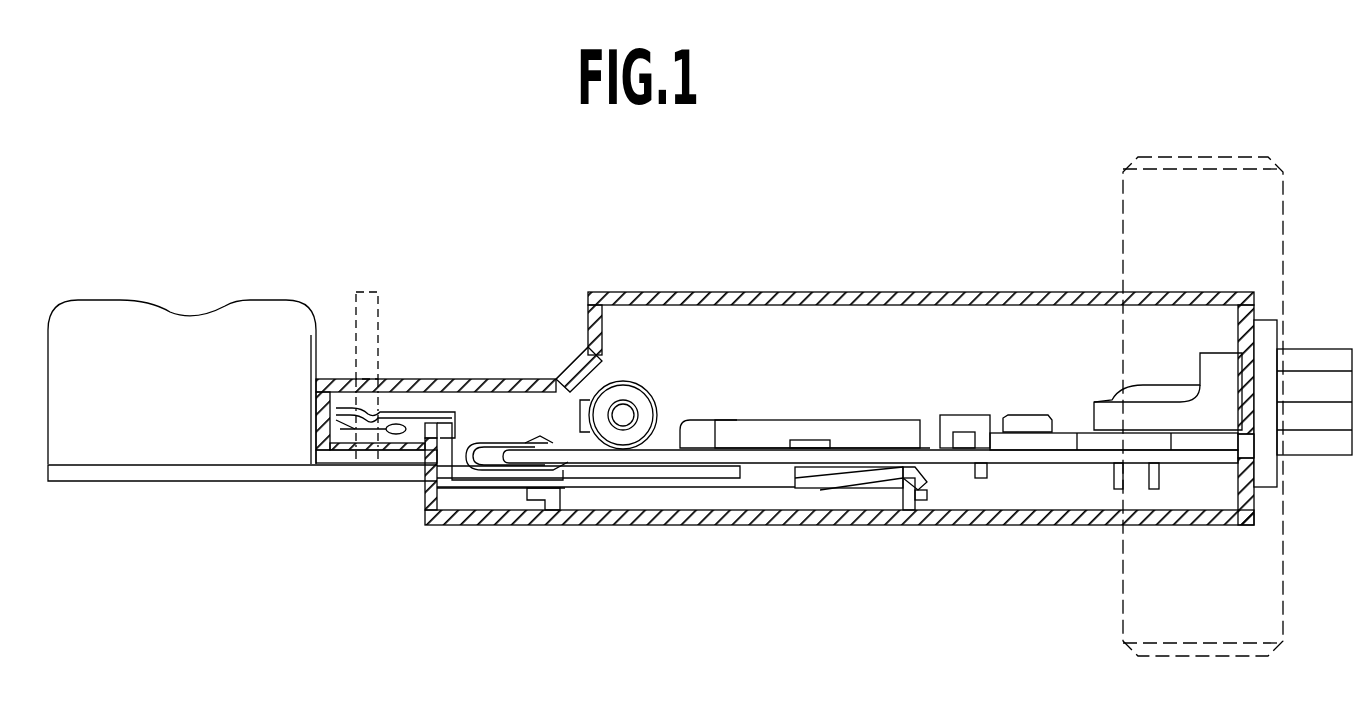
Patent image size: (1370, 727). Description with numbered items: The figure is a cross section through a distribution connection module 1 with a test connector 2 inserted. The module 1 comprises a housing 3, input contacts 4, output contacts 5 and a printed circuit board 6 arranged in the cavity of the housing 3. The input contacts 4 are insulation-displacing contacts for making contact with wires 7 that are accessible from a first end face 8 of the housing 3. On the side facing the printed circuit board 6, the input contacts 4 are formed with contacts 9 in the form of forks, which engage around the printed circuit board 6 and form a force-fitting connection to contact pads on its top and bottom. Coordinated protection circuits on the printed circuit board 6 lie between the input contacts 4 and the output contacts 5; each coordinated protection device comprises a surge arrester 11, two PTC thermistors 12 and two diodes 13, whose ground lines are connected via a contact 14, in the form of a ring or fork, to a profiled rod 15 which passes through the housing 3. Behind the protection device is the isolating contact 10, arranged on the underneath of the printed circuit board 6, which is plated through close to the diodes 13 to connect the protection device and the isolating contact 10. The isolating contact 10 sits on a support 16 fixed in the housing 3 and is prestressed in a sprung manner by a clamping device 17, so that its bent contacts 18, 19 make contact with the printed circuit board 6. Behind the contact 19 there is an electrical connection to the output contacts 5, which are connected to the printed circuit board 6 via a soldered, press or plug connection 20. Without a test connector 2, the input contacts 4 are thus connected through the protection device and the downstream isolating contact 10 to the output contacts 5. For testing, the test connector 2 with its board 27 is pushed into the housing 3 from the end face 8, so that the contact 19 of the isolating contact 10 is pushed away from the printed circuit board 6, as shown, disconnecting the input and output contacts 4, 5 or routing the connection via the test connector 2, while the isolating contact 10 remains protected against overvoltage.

The distribution connection module 1 is at (638, 240).
The test connector 2 is at (233, 300).
The housing 3 is at (778, 292).
The input contacts 4 is at (452, 455).
The output contacts 5 is at (1268, 432).
The printed circuit board 6 is at (950, 460).
The wires 7 is at (372, 316).
The first end face 8 is at (326, 452).
The contacts in the form of forks 9 is at (498, 470).
The isolating contact 10 is at (722, 482).
The surge arrester 11 is at (610, 400).
The PTC thermistors 12 is at (820, 418).
The diodes 13 is at (1010, 417).
The contact 14 is at (1042, 448).
The profiled rod 15 is at (1128, 567).
The support 16 is at (860, 492).
The clamping device 17 is at (773, 478).
The bent contact 18 is at (903, 495).
The bent contact 19 is at (546, 490).
The soldered, press or plug connection 20 is at (1158, 385).
The board 27 is at (197, 476).